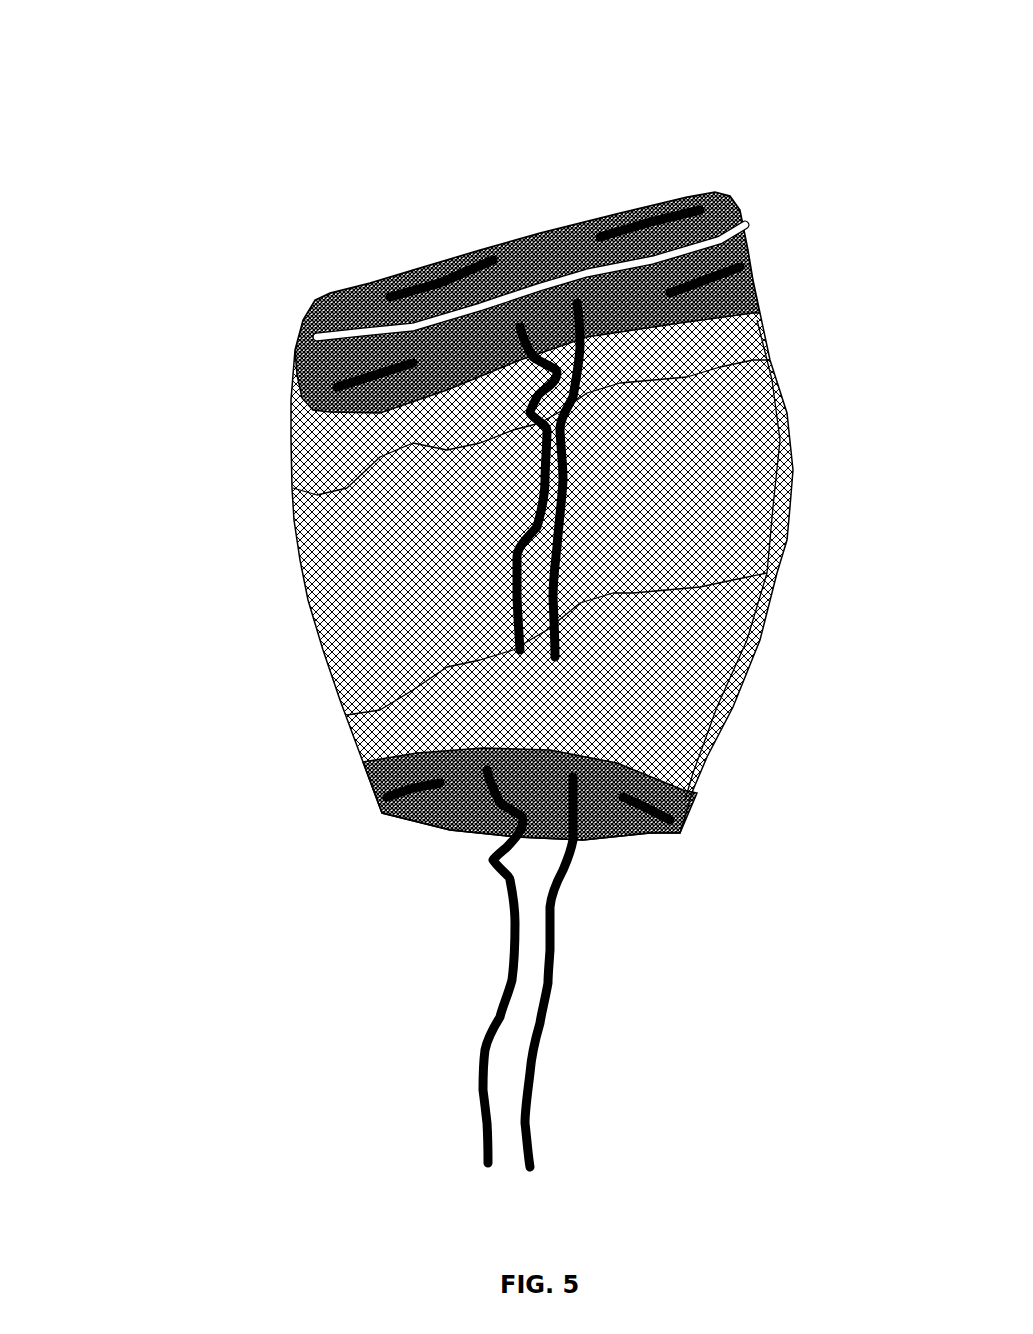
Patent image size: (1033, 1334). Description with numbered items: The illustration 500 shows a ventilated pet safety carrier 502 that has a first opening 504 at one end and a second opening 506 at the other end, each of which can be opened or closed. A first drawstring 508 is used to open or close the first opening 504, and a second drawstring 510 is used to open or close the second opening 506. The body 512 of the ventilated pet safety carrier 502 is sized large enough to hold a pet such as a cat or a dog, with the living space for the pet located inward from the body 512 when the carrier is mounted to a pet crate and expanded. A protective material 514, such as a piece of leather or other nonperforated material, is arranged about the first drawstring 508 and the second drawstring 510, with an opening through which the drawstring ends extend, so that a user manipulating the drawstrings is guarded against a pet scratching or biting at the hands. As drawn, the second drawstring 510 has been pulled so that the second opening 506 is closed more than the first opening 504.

The illustration 500 is at (162, 74).
The ventilated pet safety carrier 502 is at (383, 573).
The first opening 504 is at (415, 270).
The second opening 506 is at (467, 830).
The first drawstring 508 is at (545, 235).
The second drawstring 510 is at (553, 953).
The body 512 is at (730, 507).
The protective material 514 is at (757, 280).